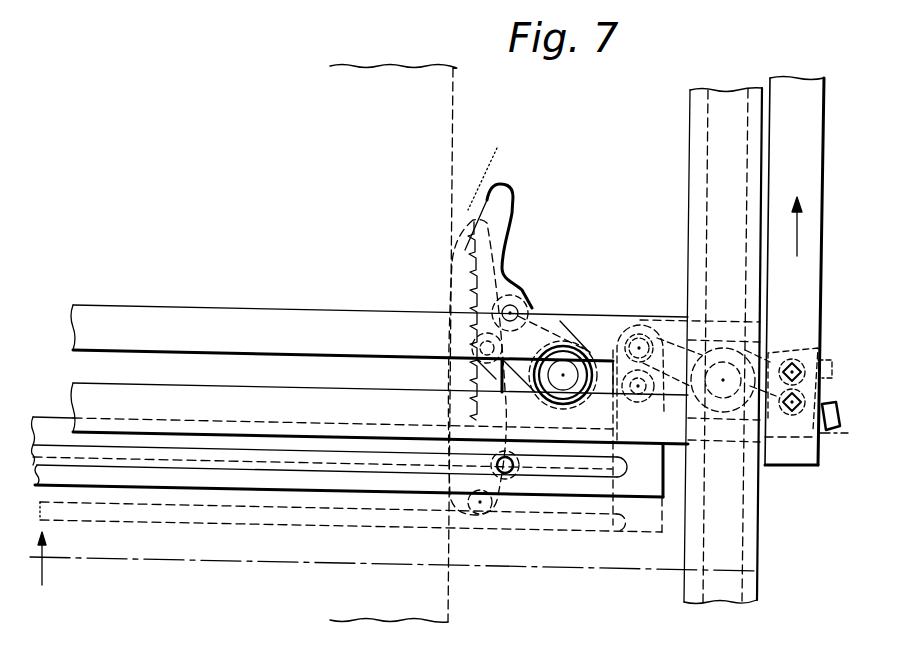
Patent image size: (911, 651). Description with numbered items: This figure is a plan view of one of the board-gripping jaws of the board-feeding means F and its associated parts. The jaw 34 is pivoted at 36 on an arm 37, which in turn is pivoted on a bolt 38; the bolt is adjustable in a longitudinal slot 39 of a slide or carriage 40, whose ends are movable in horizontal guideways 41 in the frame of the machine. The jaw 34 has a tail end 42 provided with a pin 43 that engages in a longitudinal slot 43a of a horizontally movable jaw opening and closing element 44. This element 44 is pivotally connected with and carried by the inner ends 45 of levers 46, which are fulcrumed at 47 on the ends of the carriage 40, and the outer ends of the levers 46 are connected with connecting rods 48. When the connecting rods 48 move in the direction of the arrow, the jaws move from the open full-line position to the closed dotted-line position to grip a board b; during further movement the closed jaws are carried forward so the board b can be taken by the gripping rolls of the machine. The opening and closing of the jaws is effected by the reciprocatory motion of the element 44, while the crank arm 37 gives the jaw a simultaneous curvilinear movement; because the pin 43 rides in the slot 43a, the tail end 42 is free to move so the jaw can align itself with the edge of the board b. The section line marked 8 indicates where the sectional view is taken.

The board b is at (452, 153).
The jaw 34 is at (499, 214).
The board-feeding means F is at (534, 267).
The pivot 36 is at (519, 311).
The arm 37 is at (582, 319).
The bolt 38 is at (568, 367).
The longitudinal slot 39 is at (357, 352).
The slide or carriage 40 is at (668, 323).
The horizontal guideways 41 is at (747, 535).
The tail end 42 is at (465, 493).
The pin 43 is at (497, 480).
The longitudinal slot 43a is at (587, 480).
The jaw opening and closing element 44 is at (647, 487).
The inner ends 45 is at (638, 425).
The levers 46 is at (758, 411).
The fulcrum 47 is at (766, 343).
The connecting rods 48 is at (780, 202).
The section line 8- 8 is at (428, 509).